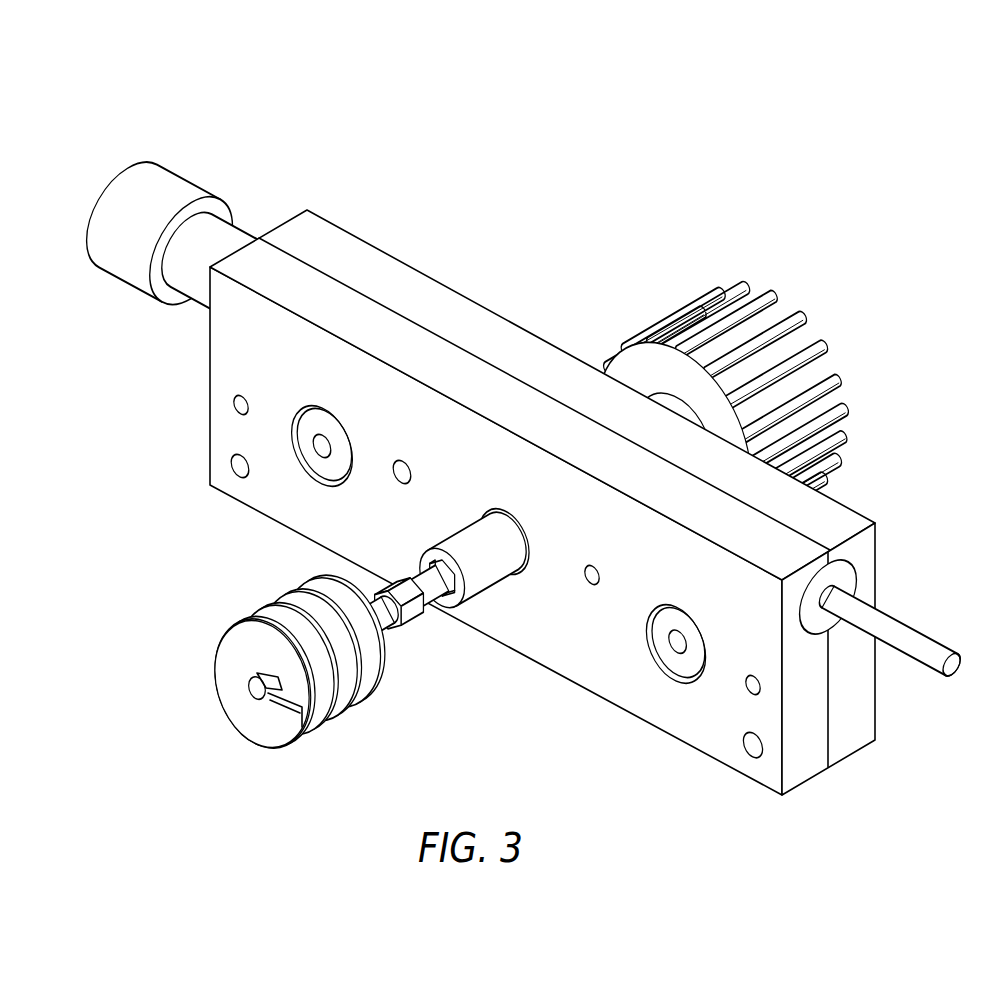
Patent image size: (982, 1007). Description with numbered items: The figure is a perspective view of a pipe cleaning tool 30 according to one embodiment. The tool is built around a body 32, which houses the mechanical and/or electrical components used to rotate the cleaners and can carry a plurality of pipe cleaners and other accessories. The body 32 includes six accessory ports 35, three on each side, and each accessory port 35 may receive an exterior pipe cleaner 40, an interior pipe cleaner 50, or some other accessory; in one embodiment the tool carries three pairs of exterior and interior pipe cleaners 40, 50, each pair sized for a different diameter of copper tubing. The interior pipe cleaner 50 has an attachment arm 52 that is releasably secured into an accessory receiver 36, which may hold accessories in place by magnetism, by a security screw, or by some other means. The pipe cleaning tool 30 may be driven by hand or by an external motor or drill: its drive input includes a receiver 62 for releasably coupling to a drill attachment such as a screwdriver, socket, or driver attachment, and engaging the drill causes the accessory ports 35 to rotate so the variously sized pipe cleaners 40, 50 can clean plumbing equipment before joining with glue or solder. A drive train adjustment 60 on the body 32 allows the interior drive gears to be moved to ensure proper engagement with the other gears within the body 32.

The pipe cleaning tool 30 is at (177, 92).
The body 32 is at (307, 210).
The accessory ports 35 is at (490, 508).
The accessory receiver 36 is at (487, 587).
The exterior pipe cleaner 40 is at (698, 300).
The interior pipe cleaner 50 is at (282, 737).
The attachment arm 52 is at (413, 607).
The drive train adjustment 60 is at (927, 657).
The receiver 62 is at (97, 180).